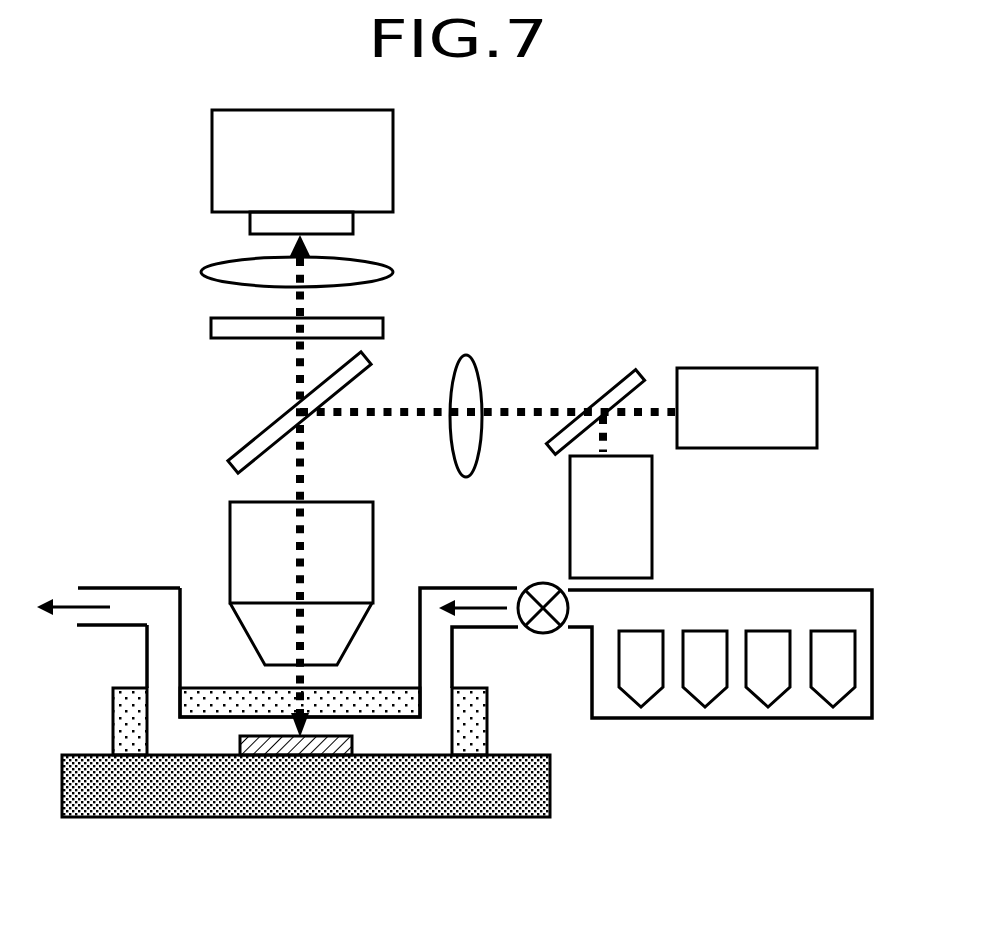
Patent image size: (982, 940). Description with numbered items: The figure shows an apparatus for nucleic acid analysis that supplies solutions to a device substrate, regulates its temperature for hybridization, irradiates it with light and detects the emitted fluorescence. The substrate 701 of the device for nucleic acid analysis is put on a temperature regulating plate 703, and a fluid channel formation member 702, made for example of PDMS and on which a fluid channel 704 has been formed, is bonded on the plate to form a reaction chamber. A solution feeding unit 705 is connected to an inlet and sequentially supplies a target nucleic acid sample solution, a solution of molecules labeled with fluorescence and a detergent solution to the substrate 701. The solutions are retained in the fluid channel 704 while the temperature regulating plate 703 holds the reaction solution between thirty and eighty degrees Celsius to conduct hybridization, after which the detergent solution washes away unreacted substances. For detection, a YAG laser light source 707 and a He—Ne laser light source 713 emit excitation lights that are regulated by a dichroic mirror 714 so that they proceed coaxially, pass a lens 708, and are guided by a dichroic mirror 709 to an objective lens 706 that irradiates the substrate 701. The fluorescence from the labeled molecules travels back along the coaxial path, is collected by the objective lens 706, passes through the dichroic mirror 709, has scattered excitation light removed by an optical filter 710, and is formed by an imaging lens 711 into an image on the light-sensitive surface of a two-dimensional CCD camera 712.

The substrate of the device for nucleic acid analysis 701 is at (255, 735).
The fluid channel formation member 702 is at (117, 720).
The temperature regulating plate 703 is at (538, 787).
The fluid channel 704 is at (160, 608).
The solution feeding unit 705 is at (725, 605).
The objective lens 706 is at (301, 583).
The YAG laser light source 707 is at (747, 408).
The lens 708 is at (479, 463).
The dichroic mirror 709 is at (245, 440).
The optical filter 710 is at (383, 328).
The imaging lens 711 is at (393, 272).
The two-dimensional CCD camera 712 is at (302, 172).
The He—Ne laser light source 713 is at (60, 568).
The dichroic mirror 714 is at (622, 371).